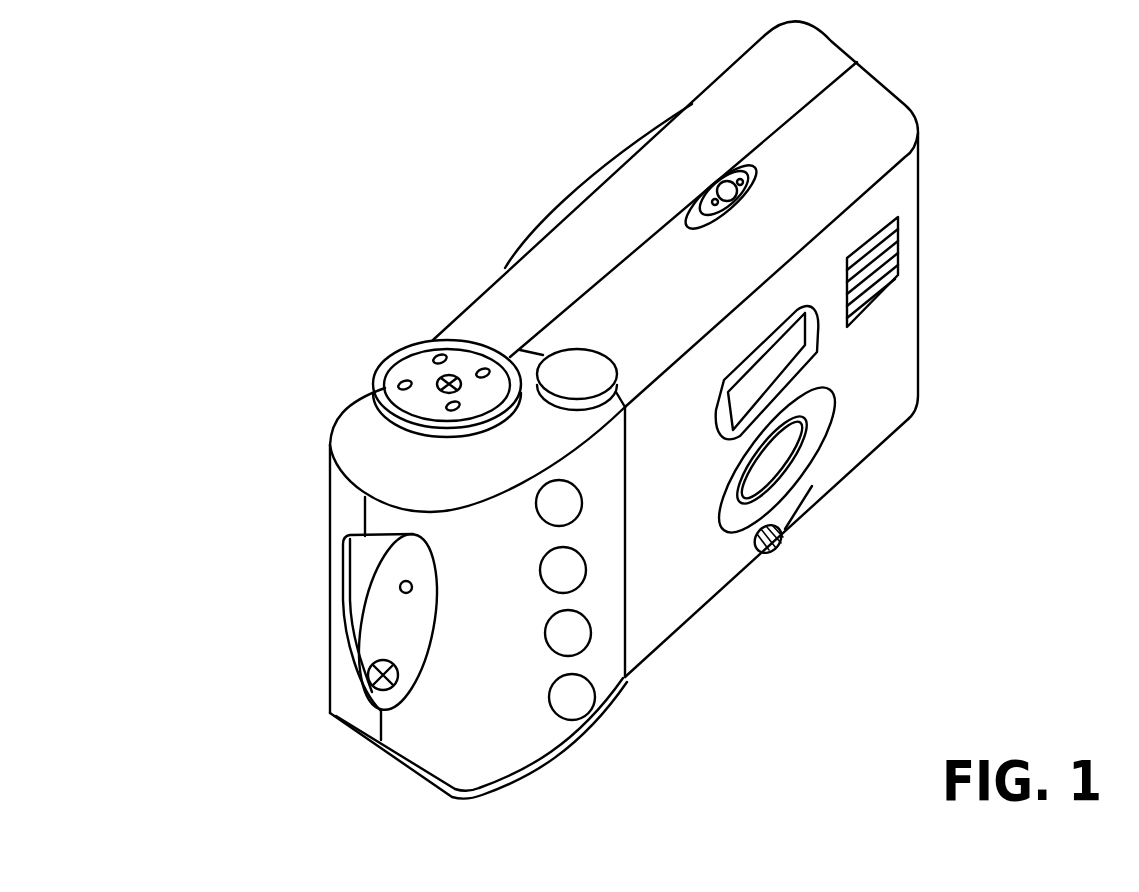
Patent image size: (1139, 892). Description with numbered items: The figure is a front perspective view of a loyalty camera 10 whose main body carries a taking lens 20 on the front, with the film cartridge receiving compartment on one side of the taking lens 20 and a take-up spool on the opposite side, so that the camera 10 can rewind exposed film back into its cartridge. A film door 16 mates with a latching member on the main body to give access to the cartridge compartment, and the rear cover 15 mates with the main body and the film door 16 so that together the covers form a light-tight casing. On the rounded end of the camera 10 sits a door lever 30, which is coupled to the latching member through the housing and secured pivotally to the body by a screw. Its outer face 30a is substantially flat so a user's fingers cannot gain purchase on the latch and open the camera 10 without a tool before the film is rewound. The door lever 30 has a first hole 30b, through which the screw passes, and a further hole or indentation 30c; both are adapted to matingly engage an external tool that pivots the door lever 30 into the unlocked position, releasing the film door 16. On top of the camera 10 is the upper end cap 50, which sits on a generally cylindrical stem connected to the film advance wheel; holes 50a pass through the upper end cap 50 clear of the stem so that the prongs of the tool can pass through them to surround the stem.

The camera 10 is at (293, 166).
The rear cover 15 is at (692, 128).
The film door 16 is at (607, 712).
The taking lens 20 is at (773, 457).
The door lever 30 is at (367, 613).
The outer face 30a is at (397, 622).
The first hole 30b is at (368, 668).
The hole or indentation 30c is at (406, 593).
The upper end cap 50 is at (408, 367).
The holes 50a is at (438, 358).